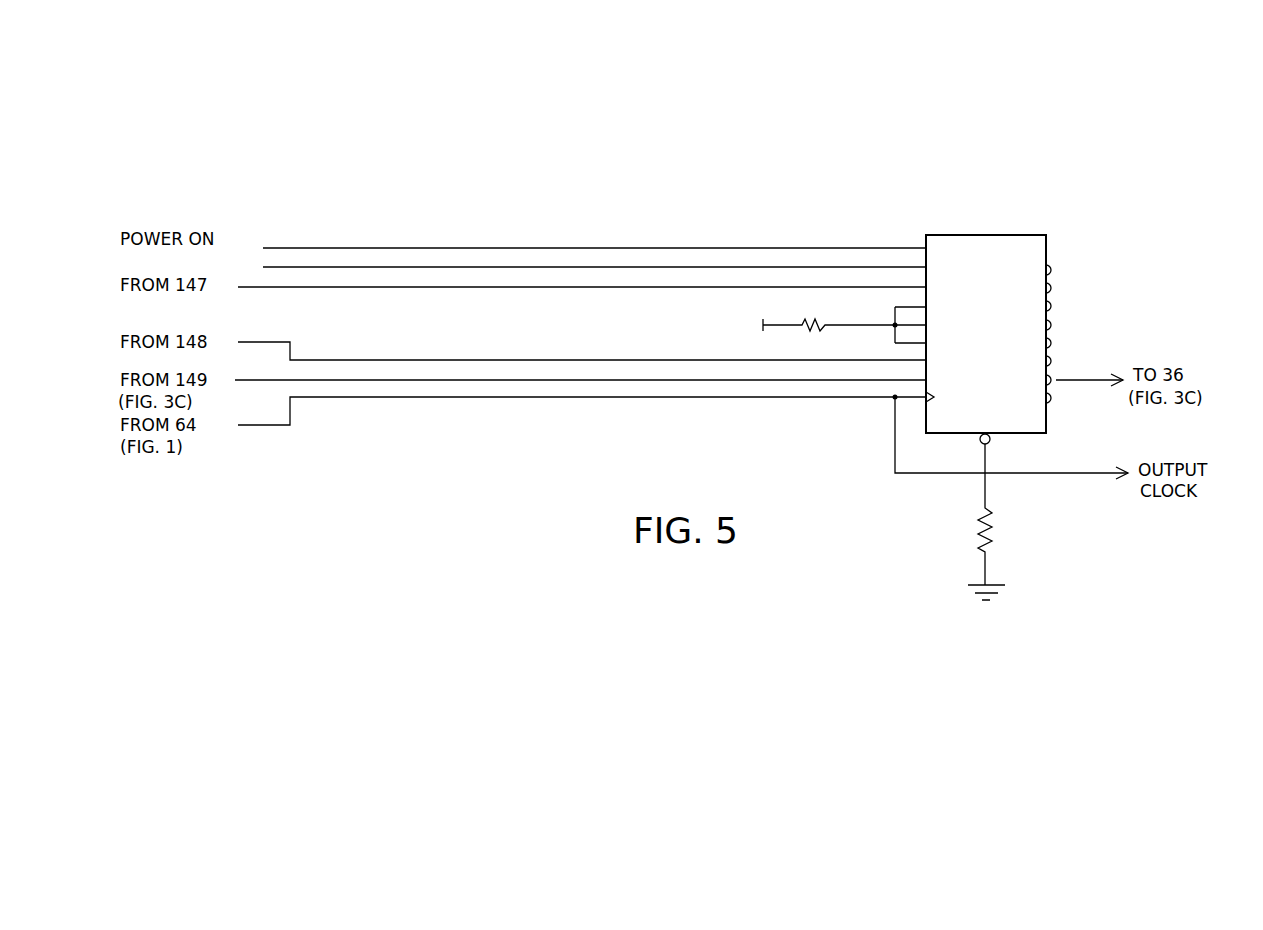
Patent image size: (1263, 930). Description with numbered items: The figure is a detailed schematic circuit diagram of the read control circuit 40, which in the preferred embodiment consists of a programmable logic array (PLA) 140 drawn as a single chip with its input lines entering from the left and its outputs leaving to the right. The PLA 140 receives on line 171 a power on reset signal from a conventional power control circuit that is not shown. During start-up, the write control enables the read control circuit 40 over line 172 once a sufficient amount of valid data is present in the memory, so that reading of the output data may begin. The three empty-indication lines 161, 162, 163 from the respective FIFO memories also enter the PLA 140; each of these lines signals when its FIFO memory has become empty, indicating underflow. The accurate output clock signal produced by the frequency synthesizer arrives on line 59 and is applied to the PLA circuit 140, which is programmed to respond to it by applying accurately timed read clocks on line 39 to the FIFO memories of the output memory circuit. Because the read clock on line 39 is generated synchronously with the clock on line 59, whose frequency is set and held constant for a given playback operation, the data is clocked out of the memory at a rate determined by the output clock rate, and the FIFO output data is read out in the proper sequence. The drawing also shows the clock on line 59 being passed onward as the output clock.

The read control circuit 40 is at (772, 229).
The programmable logic array 140 is at (1026, 242).
The power on reset line 171 is at (306, 248).
The enable line from write control 172 is at (394, 267).
The empty indication line 161 is at (393, 287).
The empty indication line 162 is at (290, 342).
The empty indication line 163 is at (286, 381).
The output clock line 59 is at (280, 425).
The read clock line 39 is at (1090, 378).